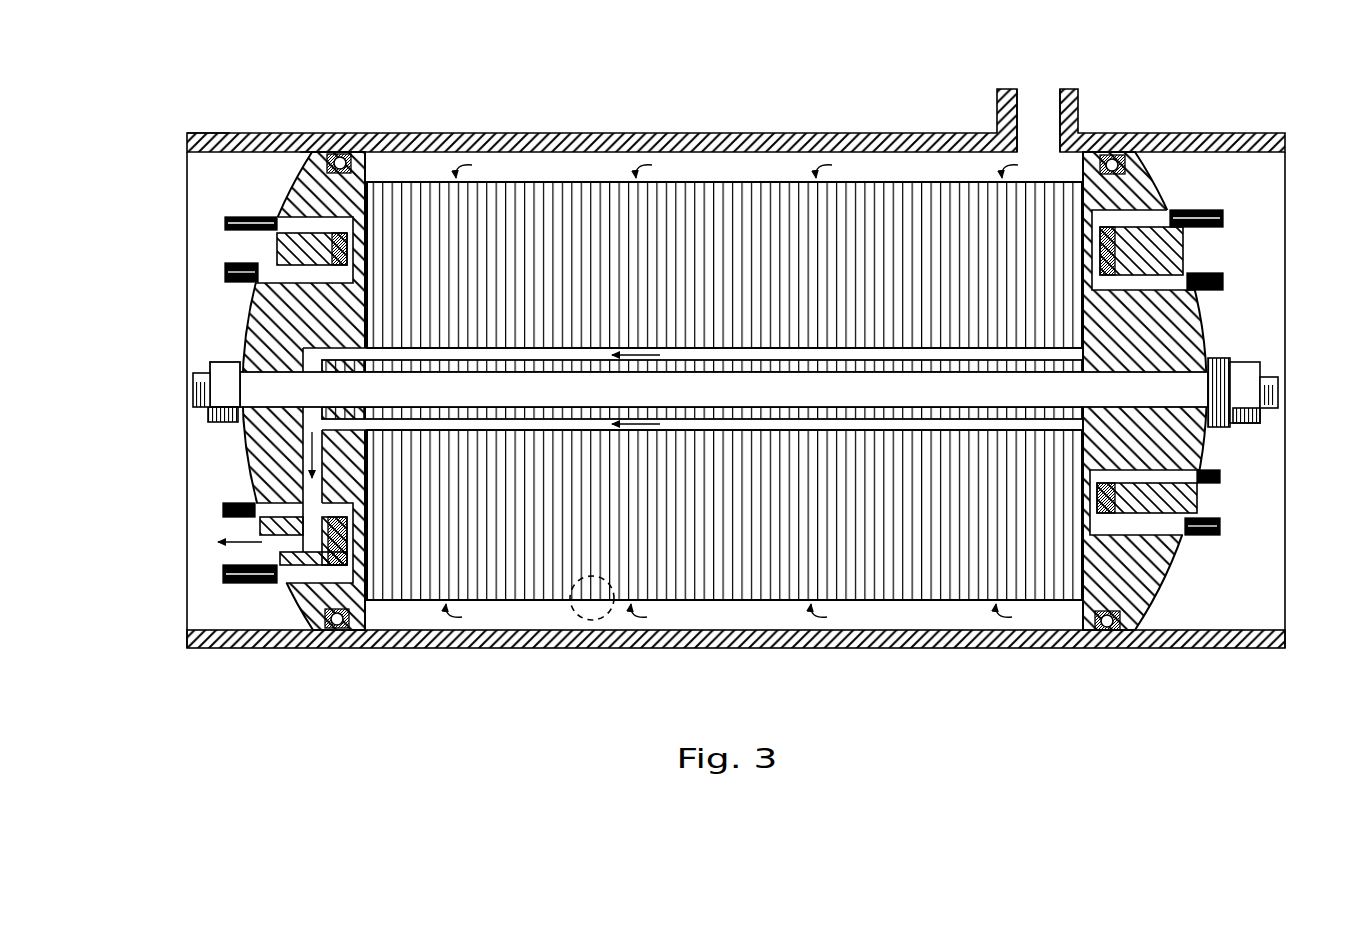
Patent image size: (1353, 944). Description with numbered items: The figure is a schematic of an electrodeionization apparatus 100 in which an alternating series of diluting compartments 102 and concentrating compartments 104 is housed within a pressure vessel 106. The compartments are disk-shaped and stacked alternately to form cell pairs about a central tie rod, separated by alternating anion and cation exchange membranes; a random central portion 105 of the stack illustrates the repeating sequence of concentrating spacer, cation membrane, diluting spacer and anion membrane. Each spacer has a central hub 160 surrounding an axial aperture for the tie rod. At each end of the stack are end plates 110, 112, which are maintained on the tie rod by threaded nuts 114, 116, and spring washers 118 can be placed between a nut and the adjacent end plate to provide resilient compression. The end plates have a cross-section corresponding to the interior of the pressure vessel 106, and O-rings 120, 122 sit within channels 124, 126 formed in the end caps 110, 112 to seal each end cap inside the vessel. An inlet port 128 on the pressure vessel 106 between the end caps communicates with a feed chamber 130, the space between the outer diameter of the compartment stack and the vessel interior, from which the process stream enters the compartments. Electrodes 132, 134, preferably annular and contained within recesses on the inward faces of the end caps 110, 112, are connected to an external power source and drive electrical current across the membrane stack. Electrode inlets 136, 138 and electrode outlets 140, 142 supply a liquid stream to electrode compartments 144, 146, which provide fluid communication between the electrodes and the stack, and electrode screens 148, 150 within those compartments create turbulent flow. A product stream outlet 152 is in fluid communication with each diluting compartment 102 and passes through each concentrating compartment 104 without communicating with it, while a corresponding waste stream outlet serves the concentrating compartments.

The electrodeionization apparatus 100 is at (228, 126).
The diluting compartments 102 is at (480, 602).
The concentrating compartments 104 is at (488, 602).
The central portion 105 is at (593, 620).
The pressure vessel 106 is at (728, 133).
The end plate 110 is at (300, 186).
The end plate 112 is at (1168, 202).
The threaded nut 114 is at (226, 362).
The threaded nut 116 is at (1262, 364).
The spring washers 118 is at (1219, 355).
The O-ring 120 is at (341, 154).
The O-ring 122 is at (1114, 156).
The channel 124 is at (325, 152).
The channel 126 is at (1138, 158).
The inlet port 128 is at (1020, 105).
The feed chamber 130 is at (490, 179).
The electrode 132 is at (277, 242).
The electrode 134 is at (1113, 505).
The electrode inlet 136 is at (242, 217).
The electrode inlet 138 is at (1214, 536).
The electrode outlet 140 is at (234, 284).
The electrode outlet 142 is at (1212, 472).
The electrode compartment 144 is at (355, 234).
The electrode compartment 146 is at (1082, 550).
The electrode screen 148 is at (370, 255).
The electrode screen 150 is at (1083, 508).
The product stream outlet 152 is at (270, 578).
The central hub 160 is at (1000, 648).